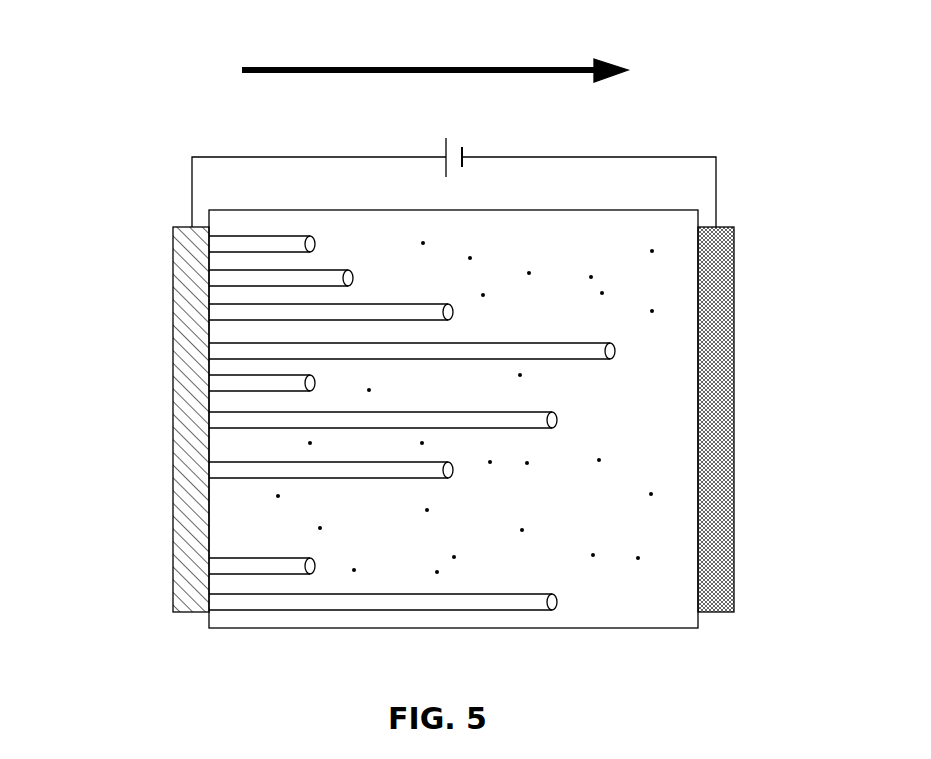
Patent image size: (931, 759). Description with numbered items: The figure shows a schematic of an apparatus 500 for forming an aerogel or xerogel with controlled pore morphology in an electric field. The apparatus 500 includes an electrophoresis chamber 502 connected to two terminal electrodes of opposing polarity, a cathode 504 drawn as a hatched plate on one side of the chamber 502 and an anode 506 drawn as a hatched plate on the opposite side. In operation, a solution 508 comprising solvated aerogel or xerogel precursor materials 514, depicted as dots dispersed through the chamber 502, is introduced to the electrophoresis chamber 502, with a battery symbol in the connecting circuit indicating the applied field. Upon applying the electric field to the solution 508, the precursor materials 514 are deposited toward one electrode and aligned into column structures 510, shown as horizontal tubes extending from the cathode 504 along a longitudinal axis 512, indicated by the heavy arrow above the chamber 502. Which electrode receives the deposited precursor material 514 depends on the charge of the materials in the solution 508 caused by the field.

The apparatus 500 is at (150, 70).
The electrophoresis chamber 502 is at (660, 628).
The cathode 504 is at (190, 412).
The anode 506 is at (714, 411).
The solution 508 is at (643, 428).
The column structures 510 is at (264, 244).
The longitudinal axis 512 is at (442, 67).
The precursor materials 514 is at (638, 560).